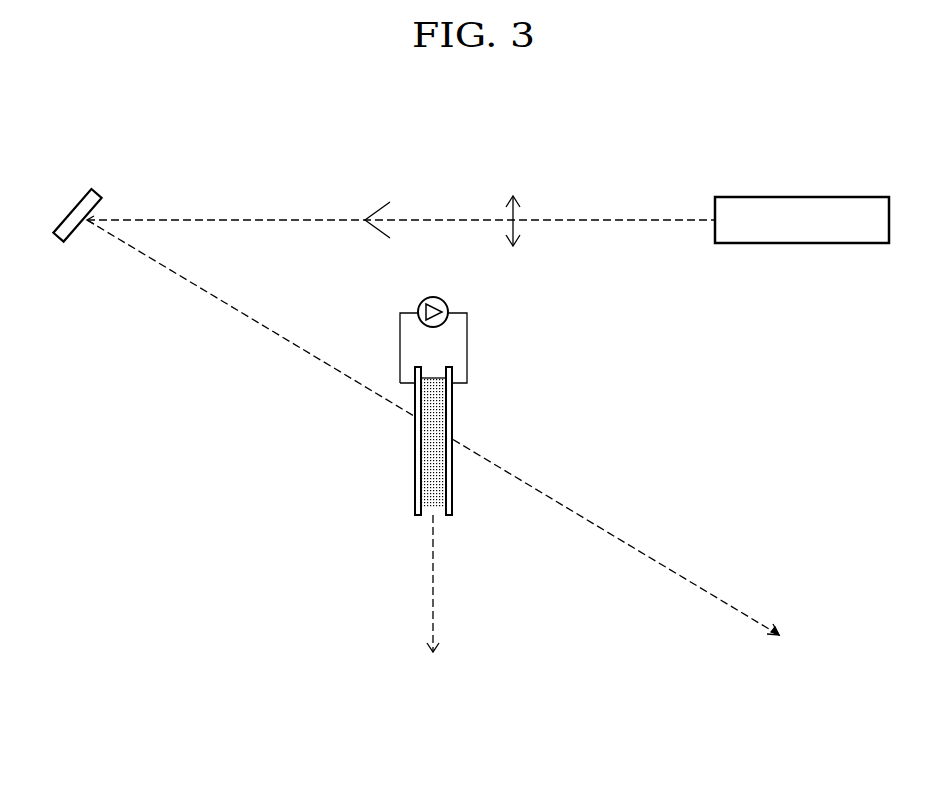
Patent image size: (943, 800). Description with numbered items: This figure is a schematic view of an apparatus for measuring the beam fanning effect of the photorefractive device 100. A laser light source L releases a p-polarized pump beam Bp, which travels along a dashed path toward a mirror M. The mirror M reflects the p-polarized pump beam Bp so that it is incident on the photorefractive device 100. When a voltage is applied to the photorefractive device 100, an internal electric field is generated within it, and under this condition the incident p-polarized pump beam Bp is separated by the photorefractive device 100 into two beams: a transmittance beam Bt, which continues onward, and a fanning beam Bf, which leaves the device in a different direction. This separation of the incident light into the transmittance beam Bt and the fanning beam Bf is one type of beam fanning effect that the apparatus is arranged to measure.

The photorefractive device 100 is at (457, 433).
The laser light source L is at (802, 220).
The mirror M is at (77, 206).
The p-polarized pump beam Bp is at (208, 220).
The transmittance beam Bt is at (447, 438).
The fanning beam Bf is at (428, 599).